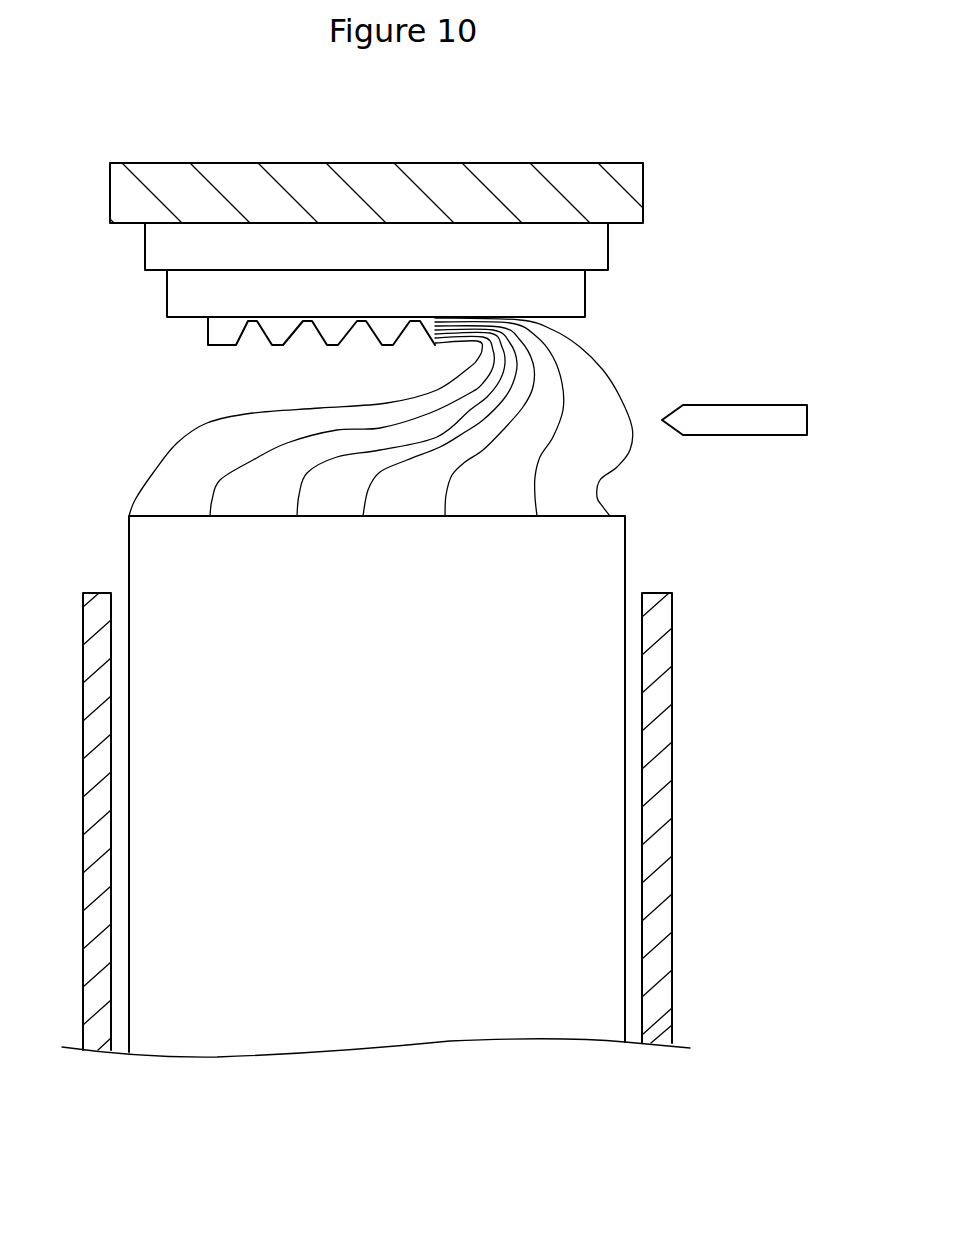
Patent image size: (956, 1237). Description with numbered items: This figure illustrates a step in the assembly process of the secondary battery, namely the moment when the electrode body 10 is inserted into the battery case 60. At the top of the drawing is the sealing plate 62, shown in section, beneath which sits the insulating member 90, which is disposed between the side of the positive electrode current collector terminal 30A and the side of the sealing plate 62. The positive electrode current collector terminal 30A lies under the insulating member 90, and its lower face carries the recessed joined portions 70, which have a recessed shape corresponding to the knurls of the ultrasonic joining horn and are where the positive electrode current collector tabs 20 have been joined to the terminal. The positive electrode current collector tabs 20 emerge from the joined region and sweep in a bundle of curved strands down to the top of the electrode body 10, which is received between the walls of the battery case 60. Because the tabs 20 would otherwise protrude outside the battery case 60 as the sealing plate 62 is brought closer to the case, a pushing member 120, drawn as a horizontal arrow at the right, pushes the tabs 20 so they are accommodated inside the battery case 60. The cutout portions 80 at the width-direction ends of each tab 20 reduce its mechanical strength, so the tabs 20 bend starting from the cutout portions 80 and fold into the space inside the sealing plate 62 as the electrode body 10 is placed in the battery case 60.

The sealing plate 62 is at (372, 186).
The insulating member 90 is at (160, 243).
The positive electrode current collector terminal 30A is at (577, 295).
The joined portion 70 is at (301, 340).
The cutout portion 80 is at (466, 358).
The positive electrode current collector tab 20 is at (527, 397).
The pushing member 120 is at (757, 436).
The electrode body 10 is at (613, 548).
The battery case 60 is at (672, 676).